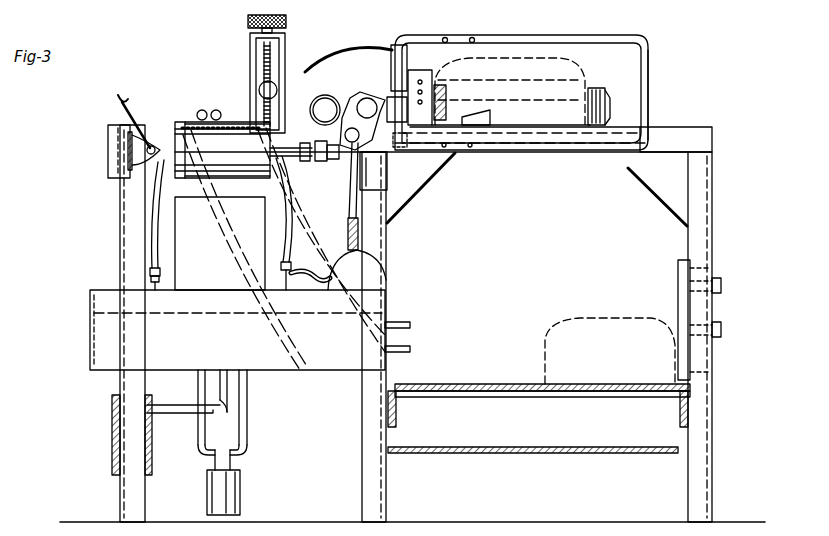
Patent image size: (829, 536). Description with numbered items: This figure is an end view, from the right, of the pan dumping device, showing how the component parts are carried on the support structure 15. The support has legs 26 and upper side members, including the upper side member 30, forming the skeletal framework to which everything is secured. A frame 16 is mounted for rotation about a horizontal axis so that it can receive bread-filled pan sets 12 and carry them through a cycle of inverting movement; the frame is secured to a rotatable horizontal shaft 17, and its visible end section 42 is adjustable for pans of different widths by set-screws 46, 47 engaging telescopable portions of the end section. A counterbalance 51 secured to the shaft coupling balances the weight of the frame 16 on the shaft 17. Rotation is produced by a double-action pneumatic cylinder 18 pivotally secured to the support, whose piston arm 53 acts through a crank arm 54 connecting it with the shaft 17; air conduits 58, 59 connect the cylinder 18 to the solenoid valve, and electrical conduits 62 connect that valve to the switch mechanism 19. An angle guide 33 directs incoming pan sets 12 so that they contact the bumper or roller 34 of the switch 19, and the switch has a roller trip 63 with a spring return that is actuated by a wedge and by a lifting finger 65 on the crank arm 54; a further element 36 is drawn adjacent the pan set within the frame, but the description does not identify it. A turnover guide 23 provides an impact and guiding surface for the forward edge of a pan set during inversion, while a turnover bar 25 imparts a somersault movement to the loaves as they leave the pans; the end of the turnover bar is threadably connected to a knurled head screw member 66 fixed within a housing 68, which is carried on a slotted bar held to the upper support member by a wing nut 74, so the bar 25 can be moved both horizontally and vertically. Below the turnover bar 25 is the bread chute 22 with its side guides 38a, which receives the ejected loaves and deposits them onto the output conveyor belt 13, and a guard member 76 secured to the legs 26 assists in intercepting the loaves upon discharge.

The pan sets 12 is at (584, 85).
The output conveyor belt 13 is at (450, 384).
The support structure 15 is at (715, 254).
The frame 16 is at (656, 73).
The horizontal shaft 17 is at (362, 98).
The double-action pneumatic cylinder 18 is at (232, 122).
The switch mechanism 19 is at (423, 67).
The chute 22 is at (209, 271).
The turnover guide 23 is at (370, 50).
The turnover bar 25 is at (274, 84).
The legs 26 is at (120, 490).
The upper side member 30 is at (676, 130).
The angle guide 33 is at (610, 100).
The bumper or roller 34 is at (436, 78).
The wedge 36 is at (490, 112).
The side guides 38a is at (412, 348).
The end section 42 is at (612, 40).
The set-screw 46 is at (445, 37).
The set-screw 47 is at (472, 37).
The counterbalance 51 is at (314, 104).
The piston arm 53 is at (312, 162).
The crank arm 54 is at (343, 160).
The air conduit 58 is at (150, 195).
The air conduit 59 is at (292, 202).
The electrical conduits 62 is at (305, 265).
The roller trip 63 is at (446, 100).
The lifting finger 65 is at (386, 156).
The knurled head screw member 66 is at (262, 47).
The housing 68 is at (282, 30).
The wing nut 74 is at (198, 112).
The guard member 76 is at (128, 92).